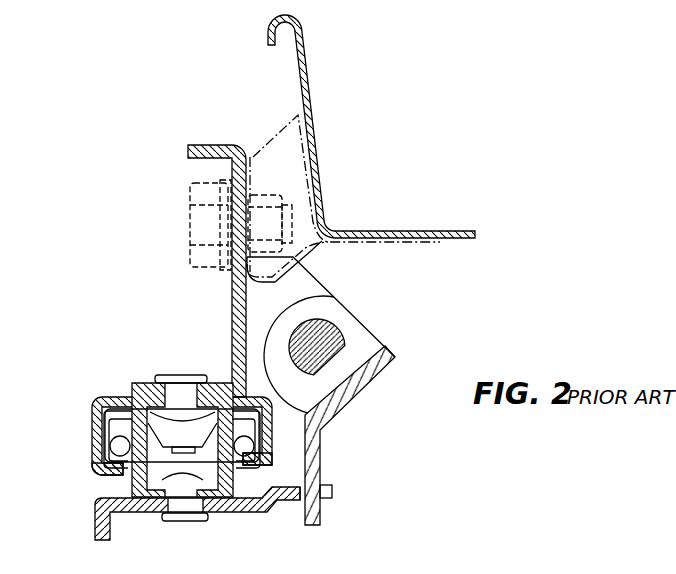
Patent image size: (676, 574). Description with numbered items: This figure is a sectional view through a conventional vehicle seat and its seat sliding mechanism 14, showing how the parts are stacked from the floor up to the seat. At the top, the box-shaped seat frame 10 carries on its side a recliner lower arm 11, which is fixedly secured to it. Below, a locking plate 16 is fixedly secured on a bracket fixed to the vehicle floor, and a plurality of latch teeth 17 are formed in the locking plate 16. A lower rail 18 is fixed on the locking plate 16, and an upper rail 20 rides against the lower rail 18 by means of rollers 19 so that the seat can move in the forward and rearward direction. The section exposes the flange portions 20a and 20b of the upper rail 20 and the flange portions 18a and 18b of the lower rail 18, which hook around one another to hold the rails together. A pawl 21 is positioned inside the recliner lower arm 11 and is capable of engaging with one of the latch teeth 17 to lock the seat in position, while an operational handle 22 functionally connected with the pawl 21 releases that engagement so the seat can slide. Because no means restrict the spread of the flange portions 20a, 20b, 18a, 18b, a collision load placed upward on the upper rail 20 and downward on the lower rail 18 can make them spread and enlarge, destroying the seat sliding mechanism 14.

The seat frame 10 is at (313, 90).
The recliner lower arm 11 is at (217, 143).
The seat sliding mechanism 14 is at (210, 415).
The locking plate 16 is at (100, 520).
The latch tooth 17 is at (302, 493).
The lower rail 18 is at (135, 483).
The flange portion of the lower rail 18a is at (106, 415).
The flange portion of the lower rail 18b is at (250, 425).
The roller 19 is at (110, 445).
The upper rail 20 is at (100, 400).
The flange portion of the upper rail 20a is at (95, 470).
The flange portion of the upper rail 20b is at (250, 465).
The pawl 21 is at (320, 521).
The operational handle 22 is at (336, 335).